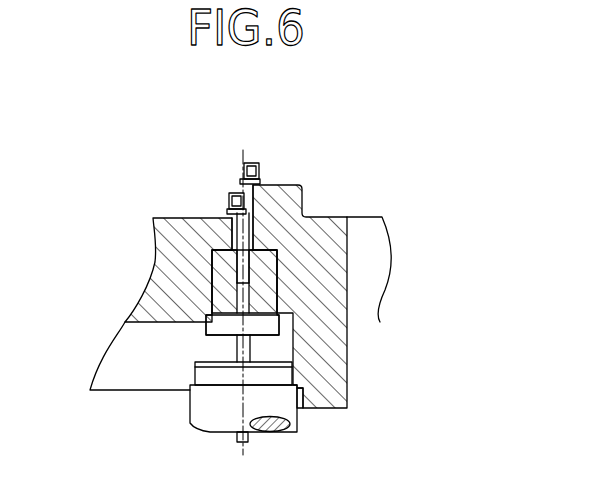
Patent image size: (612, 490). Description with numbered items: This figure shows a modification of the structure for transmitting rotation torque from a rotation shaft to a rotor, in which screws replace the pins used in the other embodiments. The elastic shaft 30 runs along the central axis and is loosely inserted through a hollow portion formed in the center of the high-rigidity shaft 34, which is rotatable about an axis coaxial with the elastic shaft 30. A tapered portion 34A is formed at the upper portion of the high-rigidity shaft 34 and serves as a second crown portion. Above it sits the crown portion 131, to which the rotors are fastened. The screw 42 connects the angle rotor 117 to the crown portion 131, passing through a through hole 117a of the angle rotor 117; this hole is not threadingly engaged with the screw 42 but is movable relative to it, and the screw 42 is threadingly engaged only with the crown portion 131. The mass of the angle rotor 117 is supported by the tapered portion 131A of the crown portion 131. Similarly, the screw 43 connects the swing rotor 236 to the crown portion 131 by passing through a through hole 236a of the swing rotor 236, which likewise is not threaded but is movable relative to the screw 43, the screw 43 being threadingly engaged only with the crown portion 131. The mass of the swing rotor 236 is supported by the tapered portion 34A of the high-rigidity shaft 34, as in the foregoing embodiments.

The elastic shaft 30 is at (246, 350).
The high-rigidity shaft 34 is at (279, 410).
The tapered portion 34A is at (297, 381).
The screw 42 is at (229, 207).
The screw 43 is at (262, 163).
The angle rotor 117 is at (173, 263).
The through hole 117a is at (233, 233).
The crown portion 131 is at (223, 301).
The tapered portion 131A is at (279, 315).
The swing rotor 236 is at (328, 217).
The through hole 236a is at (249, 215).